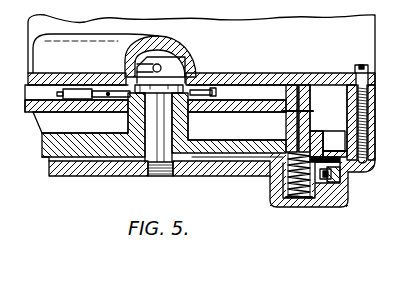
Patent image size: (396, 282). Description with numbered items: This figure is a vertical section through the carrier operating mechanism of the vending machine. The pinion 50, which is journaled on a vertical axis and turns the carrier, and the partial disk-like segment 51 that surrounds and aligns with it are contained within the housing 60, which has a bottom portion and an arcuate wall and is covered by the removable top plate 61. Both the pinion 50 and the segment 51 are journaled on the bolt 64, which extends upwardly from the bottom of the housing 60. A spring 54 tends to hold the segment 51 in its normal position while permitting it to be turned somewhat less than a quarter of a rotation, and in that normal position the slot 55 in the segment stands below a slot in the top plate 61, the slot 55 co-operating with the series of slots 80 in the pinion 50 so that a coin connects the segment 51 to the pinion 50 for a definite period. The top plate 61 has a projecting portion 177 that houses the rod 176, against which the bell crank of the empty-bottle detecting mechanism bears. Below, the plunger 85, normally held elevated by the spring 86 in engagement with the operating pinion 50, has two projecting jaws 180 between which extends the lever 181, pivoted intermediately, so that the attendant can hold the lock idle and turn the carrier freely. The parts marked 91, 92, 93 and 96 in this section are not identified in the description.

The pinion 50 is at (101, 137).
The segment 51 is at (162, 93).
The spring 54 is at (215, 93).
The slot 55 is at (298, 85).
The housing 60 is at (218, 176).
The top plate 61 is at (240, 73).
The bolt 64 is at (157, 137).
The slots 80 is at (313, 112).
The plunger 85 is at (284, 189).
The spring 86 is at (300, 198).
The chamber 91 is at (189, 128).
The block 92 is at (70, 176).
The chamber 93 is at (284, 118).
The chamber 96 is at (311, 93).
The rod 176 is at (185, 60).
The projecting portion 177 is at (161, 66).
The jaws 180 is at (329, 183).
The lever 181 is at (341, 178).